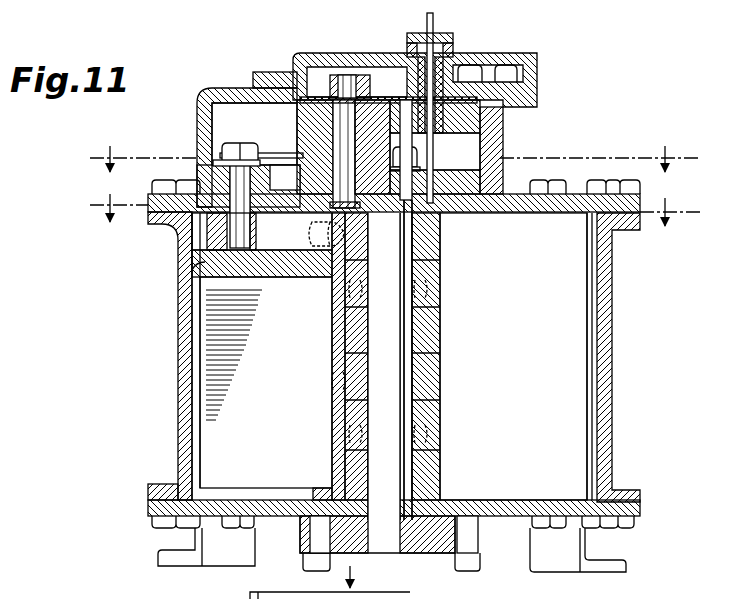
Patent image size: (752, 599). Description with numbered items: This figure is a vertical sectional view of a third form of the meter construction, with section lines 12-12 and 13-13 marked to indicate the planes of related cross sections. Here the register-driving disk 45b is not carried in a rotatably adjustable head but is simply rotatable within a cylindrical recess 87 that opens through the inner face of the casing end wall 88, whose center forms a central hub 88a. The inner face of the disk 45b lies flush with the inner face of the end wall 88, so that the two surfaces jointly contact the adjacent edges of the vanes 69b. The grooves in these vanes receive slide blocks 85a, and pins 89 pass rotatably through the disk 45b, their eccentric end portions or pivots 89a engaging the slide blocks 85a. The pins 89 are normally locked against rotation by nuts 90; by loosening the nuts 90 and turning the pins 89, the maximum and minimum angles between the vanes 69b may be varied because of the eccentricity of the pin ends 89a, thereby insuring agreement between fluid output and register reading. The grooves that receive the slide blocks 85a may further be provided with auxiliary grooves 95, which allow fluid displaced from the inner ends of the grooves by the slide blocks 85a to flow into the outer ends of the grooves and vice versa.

The section line 12- 12 is at (387, 210).
The section line 13- 13 is at (386, 159).
The register-driving disk 45b is at (462, 213).
The vanes 69b is at (205, 406).
The slide blocks 85a is at (254, 234).
The cylindrical recess 87 is at (503, 190).
The casing end wall 88 is at (575, 194).
The central hub 88a is at (303, 250).
The pins 89 is at (197, 170).
The eccentric end portions or pivots 89a is at (207, 232).
The nuts 90 is at (256, 143).
The auxiliary grooves 95 is at (192, 272).